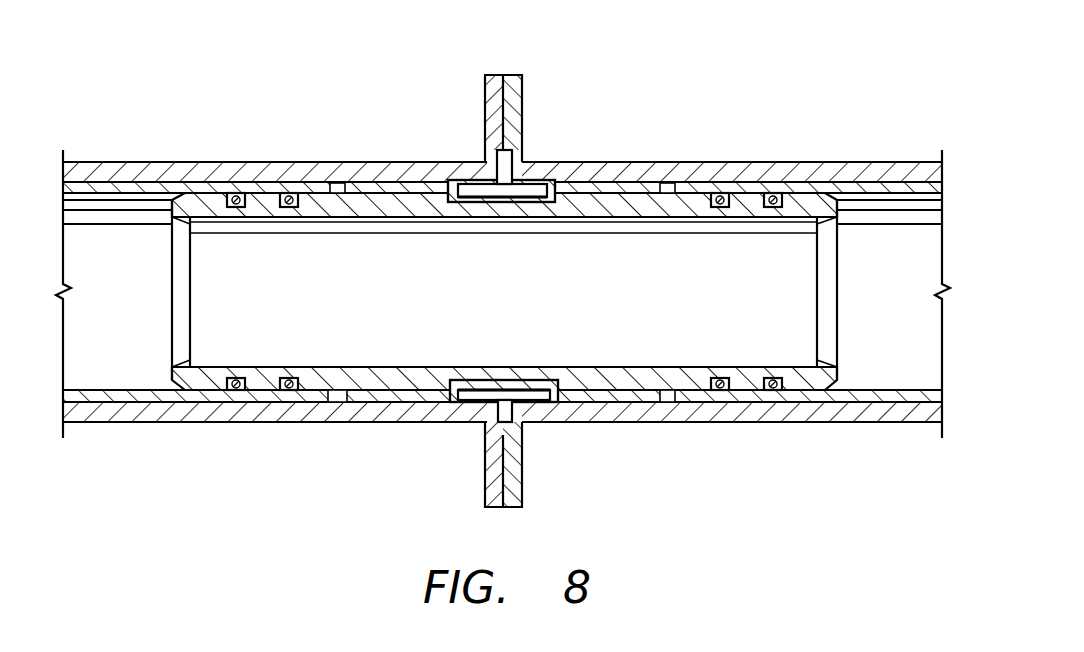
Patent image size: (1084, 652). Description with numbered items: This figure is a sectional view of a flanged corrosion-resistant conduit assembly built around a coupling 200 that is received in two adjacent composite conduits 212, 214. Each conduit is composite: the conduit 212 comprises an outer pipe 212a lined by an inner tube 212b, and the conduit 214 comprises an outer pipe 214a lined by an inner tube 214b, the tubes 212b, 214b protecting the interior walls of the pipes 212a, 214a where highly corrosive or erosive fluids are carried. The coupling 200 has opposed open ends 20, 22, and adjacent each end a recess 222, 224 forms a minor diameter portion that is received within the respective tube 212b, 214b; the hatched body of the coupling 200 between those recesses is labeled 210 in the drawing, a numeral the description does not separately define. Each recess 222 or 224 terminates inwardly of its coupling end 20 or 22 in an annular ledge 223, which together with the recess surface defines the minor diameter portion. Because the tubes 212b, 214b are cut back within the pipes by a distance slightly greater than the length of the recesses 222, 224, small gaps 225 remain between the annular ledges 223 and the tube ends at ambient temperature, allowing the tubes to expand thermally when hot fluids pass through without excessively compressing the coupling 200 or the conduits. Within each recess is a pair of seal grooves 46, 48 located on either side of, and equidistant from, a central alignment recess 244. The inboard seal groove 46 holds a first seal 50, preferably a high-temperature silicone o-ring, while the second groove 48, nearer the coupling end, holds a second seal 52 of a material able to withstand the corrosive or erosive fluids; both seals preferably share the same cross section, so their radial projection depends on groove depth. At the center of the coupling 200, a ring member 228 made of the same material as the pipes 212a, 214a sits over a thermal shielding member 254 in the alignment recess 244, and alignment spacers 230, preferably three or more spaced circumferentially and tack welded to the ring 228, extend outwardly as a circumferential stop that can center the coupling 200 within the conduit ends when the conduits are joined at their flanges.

The open end 20 is at (175, 285).
The open end 22 is at (875, 253).
The inboard seal groove 46 is at (720, 378).
The second seal groove 48 is at (797, 335).
The first seal 50 is at (735, 452).
The second seal 52 is at (803, 452).
The coupling 200 is at (525, 337).
The coupling sleeve 210 is at (637, 260).
The composite conduit 212 is at (802, 53).
The outer pipe 212a is at (568, 458).
The inner tube 212b is at (885, 458).
The composite conduit 214 is at (250, 106).
The outer pipe 214a is at (437, 458).
The inner tube 214b is at (113, 458).
The recess 222 is at (805, 194).
The annular ledge 223 is at (658, 452).
The recess 224 is at (200, 193).
The gap 225 is at (668, 190).
The ring member 228 is at (580, 137).
The alignment spacer 230 is at (496, 152).
The alignment recess 244 is at (462, 260).
The thermal shielding member 254 is at (550, 260).